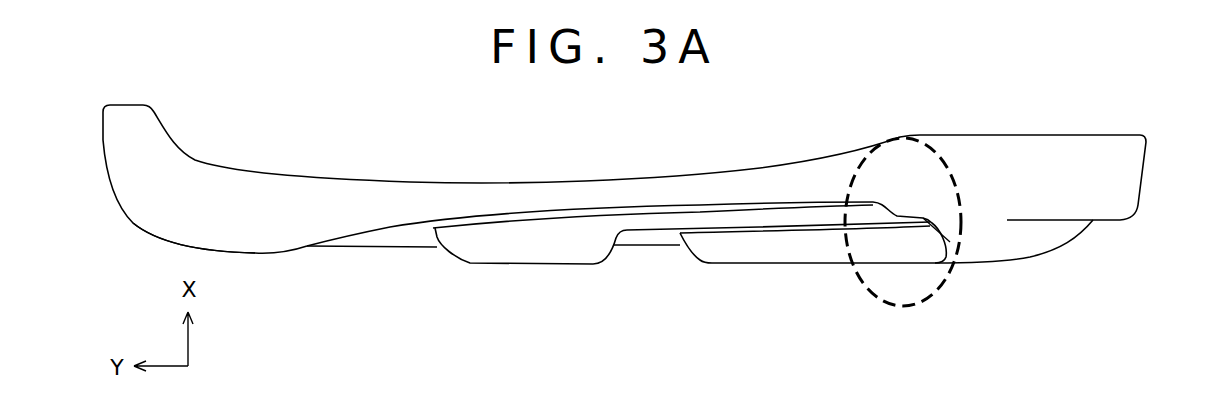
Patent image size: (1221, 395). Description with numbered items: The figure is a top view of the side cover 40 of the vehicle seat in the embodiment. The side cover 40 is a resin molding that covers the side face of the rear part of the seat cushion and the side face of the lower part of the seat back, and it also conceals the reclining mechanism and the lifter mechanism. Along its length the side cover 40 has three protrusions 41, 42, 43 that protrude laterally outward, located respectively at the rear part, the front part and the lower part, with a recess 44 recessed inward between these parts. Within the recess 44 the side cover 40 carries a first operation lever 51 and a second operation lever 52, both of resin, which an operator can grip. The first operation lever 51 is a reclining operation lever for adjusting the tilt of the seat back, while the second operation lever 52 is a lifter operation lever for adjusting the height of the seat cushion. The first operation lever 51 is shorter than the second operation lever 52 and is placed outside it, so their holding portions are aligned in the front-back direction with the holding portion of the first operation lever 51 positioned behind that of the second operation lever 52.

The side cover 40 is at (752, 167).
The protrusion 41 is at (1020, 252).
The protrusion 42 is at (263, 240).
The protrusion 43 is at (653, 245).
The recess 44 is at (392, 227).
The first operation lever 51 is at (787, 262).
The second operation lever 52 is at (520, 265).